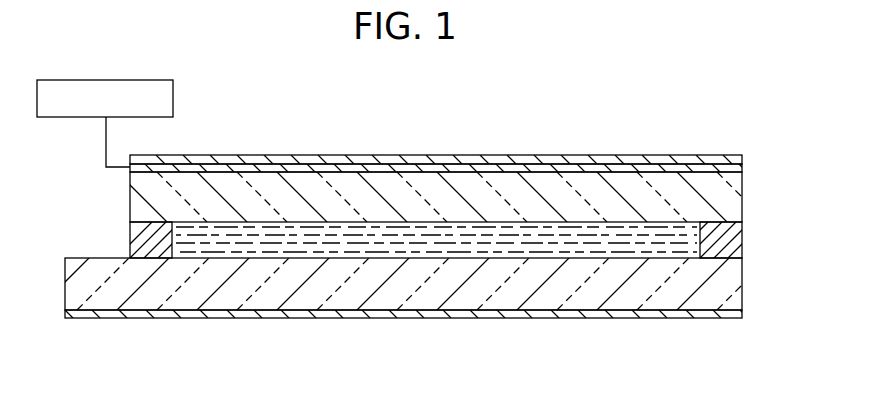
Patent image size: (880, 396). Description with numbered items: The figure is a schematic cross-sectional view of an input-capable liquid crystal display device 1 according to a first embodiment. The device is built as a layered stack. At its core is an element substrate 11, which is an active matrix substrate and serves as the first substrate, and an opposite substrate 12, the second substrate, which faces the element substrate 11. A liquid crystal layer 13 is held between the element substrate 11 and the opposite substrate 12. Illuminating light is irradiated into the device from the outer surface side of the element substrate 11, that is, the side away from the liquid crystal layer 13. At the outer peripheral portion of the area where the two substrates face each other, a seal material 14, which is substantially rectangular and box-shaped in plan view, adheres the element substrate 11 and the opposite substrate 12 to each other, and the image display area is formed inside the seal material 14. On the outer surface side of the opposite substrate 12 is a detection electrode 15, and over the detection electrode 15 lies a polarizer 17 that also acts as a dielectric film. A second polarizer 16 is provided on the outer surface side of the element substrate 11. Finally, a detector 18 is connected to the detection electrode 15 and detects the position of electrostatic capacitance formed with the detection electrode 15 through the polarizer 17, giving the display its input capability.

The input-capable liquid crystal display device 1 is at (738, 90).
The element substrate 11 is at (742, 280).
The opposite substrate 12 is at (742, 202).
The liquid crystal layer 13 is at (540, 254).
The seal material 14 is at (144, 243).
The detection electrode 15 is at (742, 168).
The polarizer 16 is at (742, 313).
The polarizer (dielectric film) 17 is at (742, 157).
The detector 18 is at (66, 80).